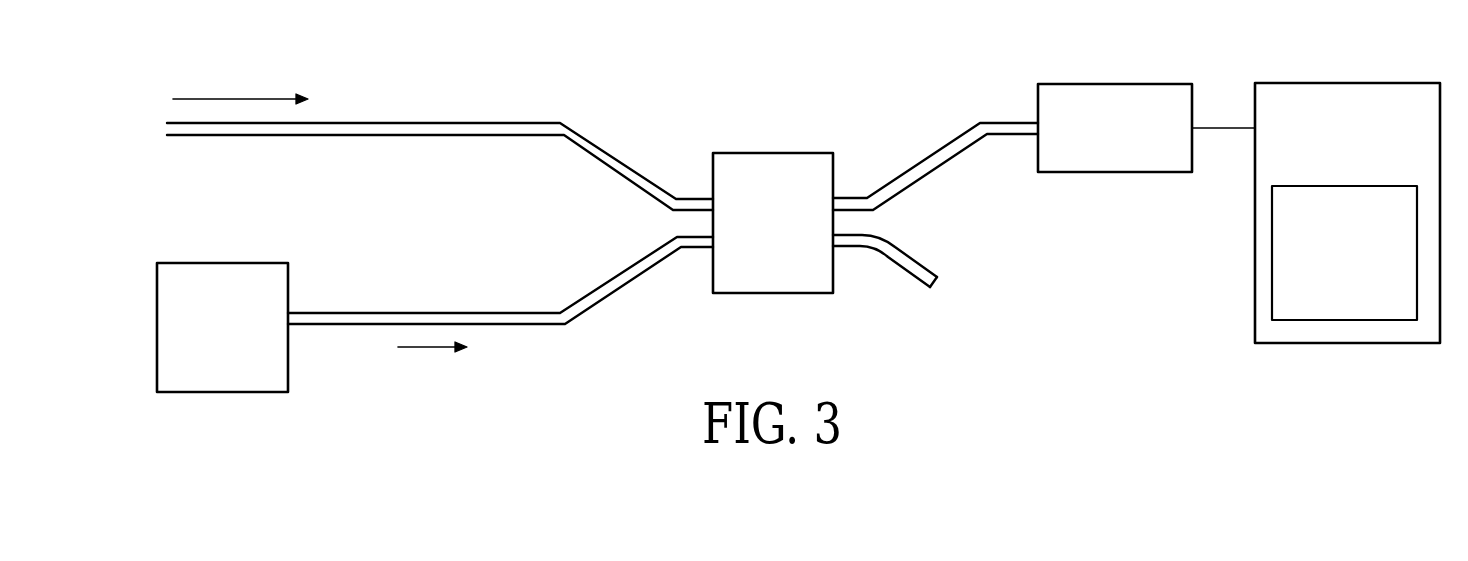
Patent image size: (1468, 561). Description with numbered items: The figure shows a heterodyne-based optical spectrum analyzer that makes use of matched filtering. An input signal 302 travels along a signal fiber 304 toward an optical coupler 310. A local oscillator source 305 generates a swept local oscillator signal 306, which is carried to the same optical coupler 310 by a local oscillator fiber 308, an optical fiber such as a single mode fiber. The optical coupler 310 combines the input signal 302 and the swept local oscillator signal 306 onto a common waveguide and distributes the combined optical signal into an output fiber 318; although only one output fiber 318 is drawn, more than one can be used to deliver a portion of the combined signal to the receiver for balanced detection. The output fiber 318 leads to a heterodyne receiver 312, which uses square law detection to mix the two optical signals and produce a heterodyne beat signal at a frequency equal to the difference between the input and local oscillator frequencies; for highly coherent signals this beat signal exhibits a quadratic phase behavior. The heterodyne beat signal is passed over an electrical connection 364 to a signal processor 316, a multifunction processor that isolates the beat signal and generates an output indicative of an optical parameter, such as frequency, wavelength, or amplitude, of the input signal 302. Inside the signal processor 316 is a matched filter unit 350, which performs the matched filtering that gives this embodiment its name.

The input signal 302 is at (269, 80).
The signal fiber 304 is at (610, 154).
The local oscillator source 305 is at (222, 262).
The local oscillator signal 306 is at (445, 383).
The local oscillator fiber 308 is at (608, 293).
The optical coupler 310 is at (773, 152).
The heterodyne receiver 312 is at (1113, 172).
The signal processor 316 is at (1345, 83).
The output fiber 318 is at (935, 152).
The matched filter unit 350 is at (1365, 224).
The electrical connection 364 is at (1222, 127).